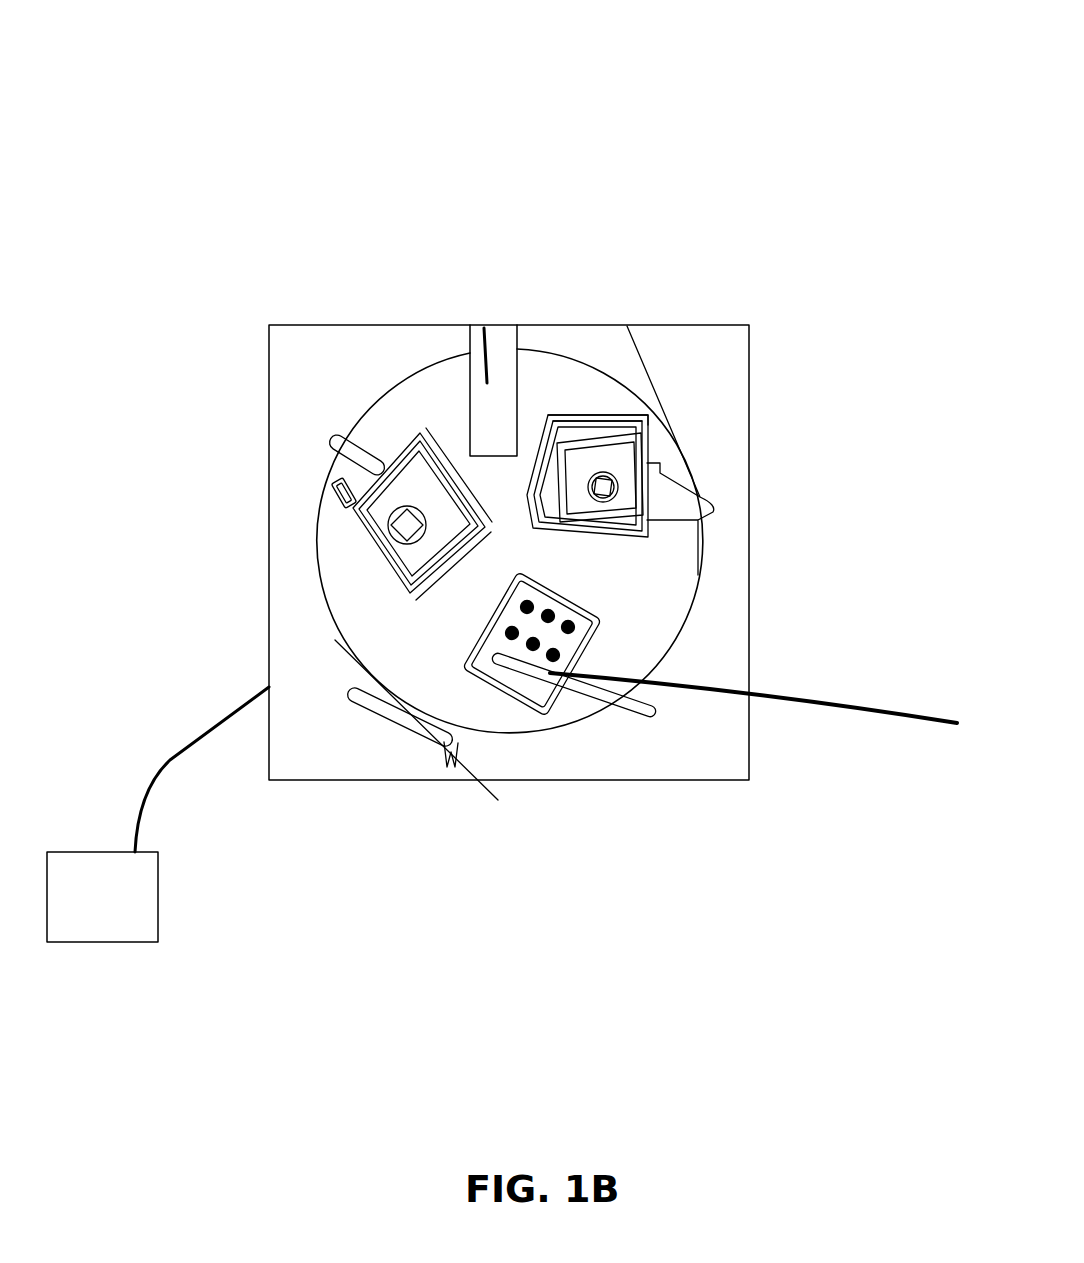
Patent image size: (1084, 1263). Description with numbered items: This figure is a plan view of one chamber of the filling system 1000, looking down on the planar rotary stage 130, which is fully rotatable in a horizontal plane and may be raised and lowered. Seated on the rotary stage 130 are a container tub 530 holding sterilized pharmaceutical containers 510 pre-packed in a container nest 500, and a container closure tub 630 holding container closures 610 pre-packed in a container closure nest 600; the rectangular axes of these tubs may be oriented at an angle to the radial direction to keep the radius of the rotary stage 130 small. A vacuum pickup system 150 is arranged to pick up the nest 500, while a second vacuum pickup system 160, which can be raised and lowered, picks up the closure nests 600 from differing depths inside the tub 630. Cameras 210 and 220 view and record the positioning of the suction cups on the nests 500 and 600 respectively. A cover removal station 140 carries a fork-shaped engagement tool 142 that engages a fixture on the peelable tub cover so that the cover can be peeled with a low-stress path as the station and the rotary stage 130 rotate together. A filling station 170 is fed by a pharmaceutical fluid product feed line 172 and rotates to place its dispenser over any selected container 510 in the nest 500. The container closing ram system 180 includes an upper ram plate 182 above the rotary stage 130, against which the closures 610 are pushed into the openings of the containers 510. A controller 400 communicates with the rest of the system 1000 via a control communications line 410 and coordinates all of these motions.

The filling system 1000 is at (523, 158).
The planar rotary stage 130 is at (573, 710).
The container closing ram system 180 is at (487, 383).
The upper ram plate 182 is at (537, 412).
The container tub 530 is at (425, 435).
The camera 210 is at (405, 517).
The vacuum pickup system 150 is at (330, 452).
The container closure nest 600 is at (612, 440).
The container closure tub 630 is at (583, 415).
The container closure 610 is at (612, 472).
The camera 220 is at (612, 475).
The vacuum pickup system 160 is at (683, 503).
The container nest 500 is at (555, 600).
The pharmaceutical container 510 is at (562, 628).
The filling station 170 is at (657, 717).
The pharmaceutical fluid product feed line 172 is at (863, 702).
The cover removal station 140 is at (372, 710).
The engagement tool 142 is at (457, 765).
The control communications line 410 is at (170, 757).
The controller 400 is at (135, 903).